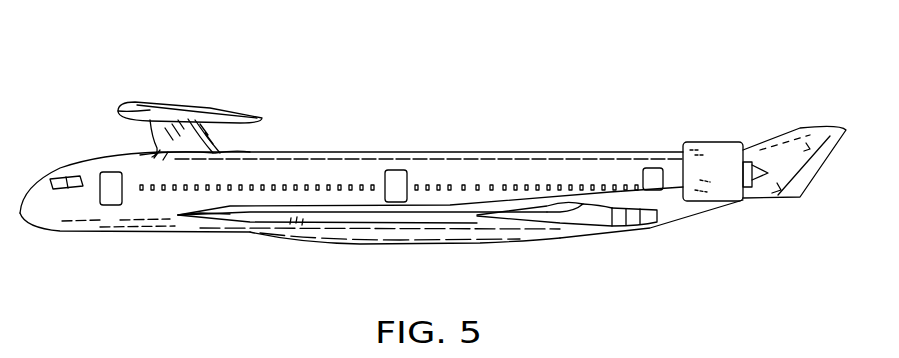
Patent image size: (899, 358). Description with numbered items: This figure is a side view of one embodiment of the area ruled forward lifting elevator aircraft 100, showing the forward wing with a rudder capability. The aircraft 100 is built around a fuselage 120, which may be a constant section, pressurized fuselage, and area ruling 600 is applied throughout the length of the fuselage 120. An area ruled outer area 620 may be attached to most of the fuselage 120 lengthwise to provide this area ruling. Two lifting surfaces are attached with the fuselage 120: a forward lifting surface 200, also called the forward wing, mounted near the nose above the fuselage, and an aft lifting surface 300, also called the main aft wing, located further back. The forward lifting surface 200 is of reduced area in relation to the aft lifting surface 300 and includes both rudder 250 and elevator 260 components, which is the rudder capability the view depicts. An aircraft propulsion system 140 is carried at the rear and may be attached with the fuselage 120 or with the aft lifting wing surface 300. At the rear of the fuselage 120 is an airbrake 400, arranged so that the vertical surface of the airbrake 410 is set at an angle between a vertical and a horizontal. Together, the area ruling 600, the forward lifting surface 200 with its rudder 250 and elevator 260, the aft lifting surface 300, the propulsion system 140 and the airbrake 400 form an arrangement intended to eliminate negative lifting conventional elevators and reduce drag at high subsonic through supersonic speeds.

The area ruled forward lifting elevator aircraft 100 is at (457, 302).
The fuselage 120 is at (565, 152).
The aircraft propulsion system 140 is at (712, 142).
The forward lifting surface 200 is at (198, 78).
The rudder 250 is at (320, 118).
The elevator 260 is at (213, 144).
The aft lifting surface 300 is at (603, 246).
The airbrake 400 is at (827, 207).
The vertical surface of the airbrake 410 is at (783, 199).
The area ruling 600 is at (250, 243).
The area ruled outer area 620 is at (342, 242).